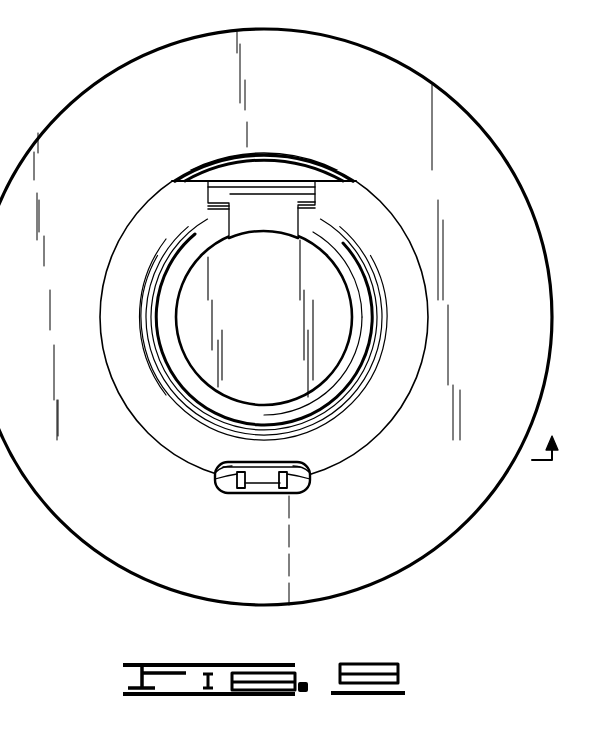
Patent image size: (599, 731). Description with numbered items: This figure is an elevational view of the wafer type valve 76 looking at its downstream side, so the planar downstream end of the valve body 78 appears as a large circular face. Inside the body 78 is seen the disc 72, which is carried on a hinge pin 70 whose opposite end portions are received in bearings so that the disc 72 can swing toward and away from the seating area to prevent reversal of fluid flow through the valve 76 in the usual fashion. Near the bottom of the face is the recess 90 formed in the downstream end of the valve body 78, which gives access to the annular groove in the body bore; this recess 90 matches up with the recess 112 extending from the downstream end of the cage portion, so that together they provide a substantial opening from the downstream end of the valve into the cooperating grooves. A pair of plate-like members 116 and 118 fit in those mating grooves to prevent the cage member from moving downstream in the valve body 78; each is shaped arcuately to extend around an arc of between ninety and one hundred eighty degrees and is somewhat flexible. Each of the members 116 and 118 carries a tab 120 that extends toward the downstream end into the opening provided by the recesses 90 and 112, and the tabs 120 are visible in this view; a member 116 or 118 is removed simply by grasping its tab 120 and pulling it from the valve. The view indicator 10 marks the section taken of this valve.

The section line / view indicator 10 is at (547, 437).
The hinge pin 70 is at (217, 203).
The disc 72 is at (279, 300).
The valve 76 is at (118, 62).
The valve body 78 is at (410, 88).
The recess 90 is at (265, 487).
The recess 112 is at (260, 473).
The plate-like member 116 is at (222, 474).
The plate-like member 118 is at (300, 474).
The tab 120 is at (240, 490).